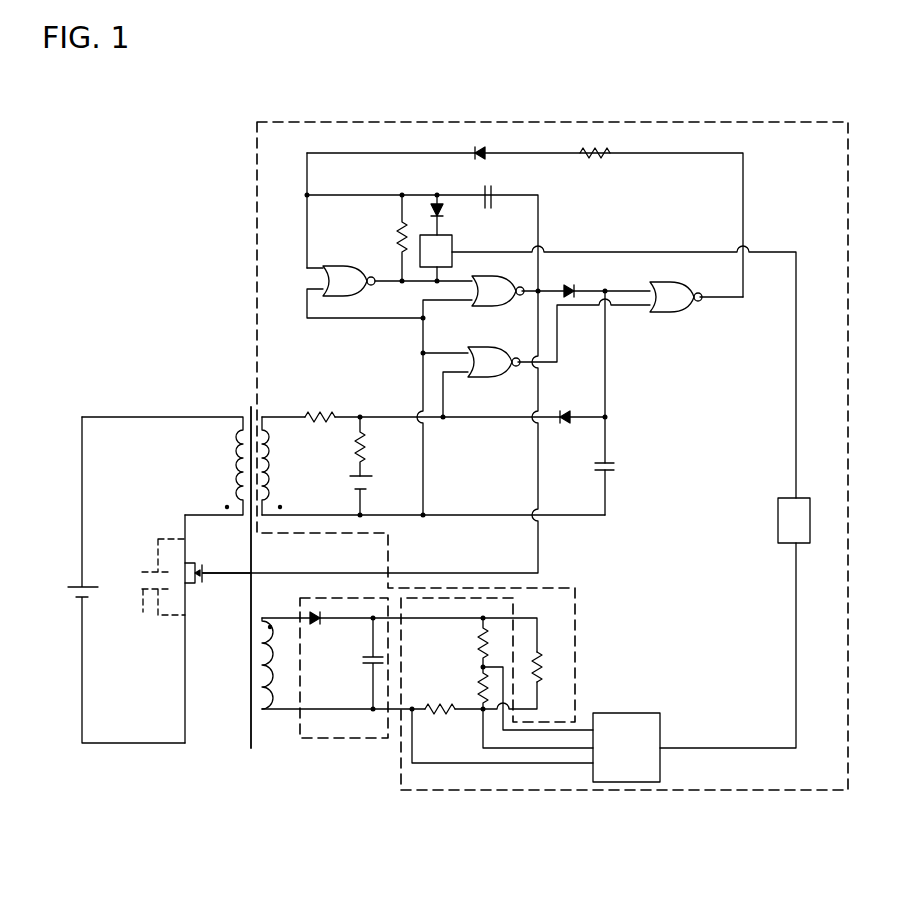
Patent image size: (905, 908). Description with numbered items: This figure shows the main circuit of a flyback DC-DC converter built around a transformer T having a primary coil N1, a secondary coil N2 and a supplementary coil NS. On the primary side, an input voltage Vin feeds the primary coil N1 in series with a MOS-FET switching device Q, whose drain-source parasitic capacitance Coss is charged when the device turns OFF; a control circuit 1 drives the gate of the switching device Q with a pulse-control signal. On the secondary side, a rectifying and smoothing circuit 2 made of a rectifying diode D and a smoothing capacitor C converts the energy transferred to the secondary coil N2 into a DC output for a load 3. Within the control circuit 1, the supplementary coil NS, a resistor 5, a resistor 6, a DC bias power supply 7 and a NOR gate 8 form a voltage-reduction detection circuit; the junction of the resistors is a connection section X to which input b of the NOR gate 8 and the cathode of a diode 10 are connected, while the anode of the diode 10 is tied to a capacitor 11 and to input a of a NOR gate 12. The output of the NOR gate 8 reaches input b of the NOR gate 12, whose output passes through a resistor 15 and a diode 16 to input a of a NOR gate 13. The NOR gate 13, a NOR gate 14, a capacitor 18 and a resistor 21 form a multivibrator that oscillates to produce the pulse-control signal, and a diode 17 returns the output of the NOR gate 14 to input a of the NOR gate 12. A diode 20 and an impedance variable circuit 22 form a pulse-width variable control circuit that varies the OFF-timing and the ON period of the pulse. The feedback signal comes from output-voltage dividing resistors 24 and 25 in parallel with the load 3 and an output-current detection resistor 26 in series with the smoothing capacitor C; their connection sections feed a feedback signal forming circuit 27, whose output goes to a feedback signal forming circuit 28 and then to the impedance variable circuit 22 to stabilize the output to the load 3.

The control circuit 1 is at (257, 237).
The rectifying and smoothing circuit 2 is at (340, 738).
The load 3 is at (540, 660).
The resistor 5 is at (318, 412).
The resistor 6 is at (366, 450).
The DC bias power supply 7 is at (370, 490).
The NOR gate 8 is at (490, 377).
The diode 10 is at (565, 424).
The capacitor 11 is at (612, 474).
The NOR gate 12 is at (660, 312).
The NOR gate 13 is at (355, 296).
The NOR gate 14 is at (498, 306).
The resistor 15 is at (605, 158).
The diode 16 is at (485, 158).
The diode 17 is at (570, 284).
The capacitor 18 is at (484, 190).
The diode 20 is at (445, 212).
The resistor 21 is at (397, 232).
The impedance variable circuit 22 is at (452, 245).
The output-voltage dividing resistor 24 is at (480, 650).
The output-voltage dividing resistor 25 is at (480, 690).
The output-current detection resistor 26 is at (440, 714).
The feedback signal forming circuit 27 is at (650, 732).
The feedback signal forming circuit 28 is at (778, 535).
The transformer T is at (250, 408).
The primary coil N1 is at (235, 468).
The supplementary coil NS is at (276, 468).
The secondary coil N2 is at (282, 697).
The switching device Q is at (200, 584).
The rectifying diode D is at (316, 625).
The smoothing capacitor C is at (366, 666).
The input voltage Vin is at (104, 580).
The parasitic capacitance Coss is at (151, 590).
The connection section X is at (365, 415).